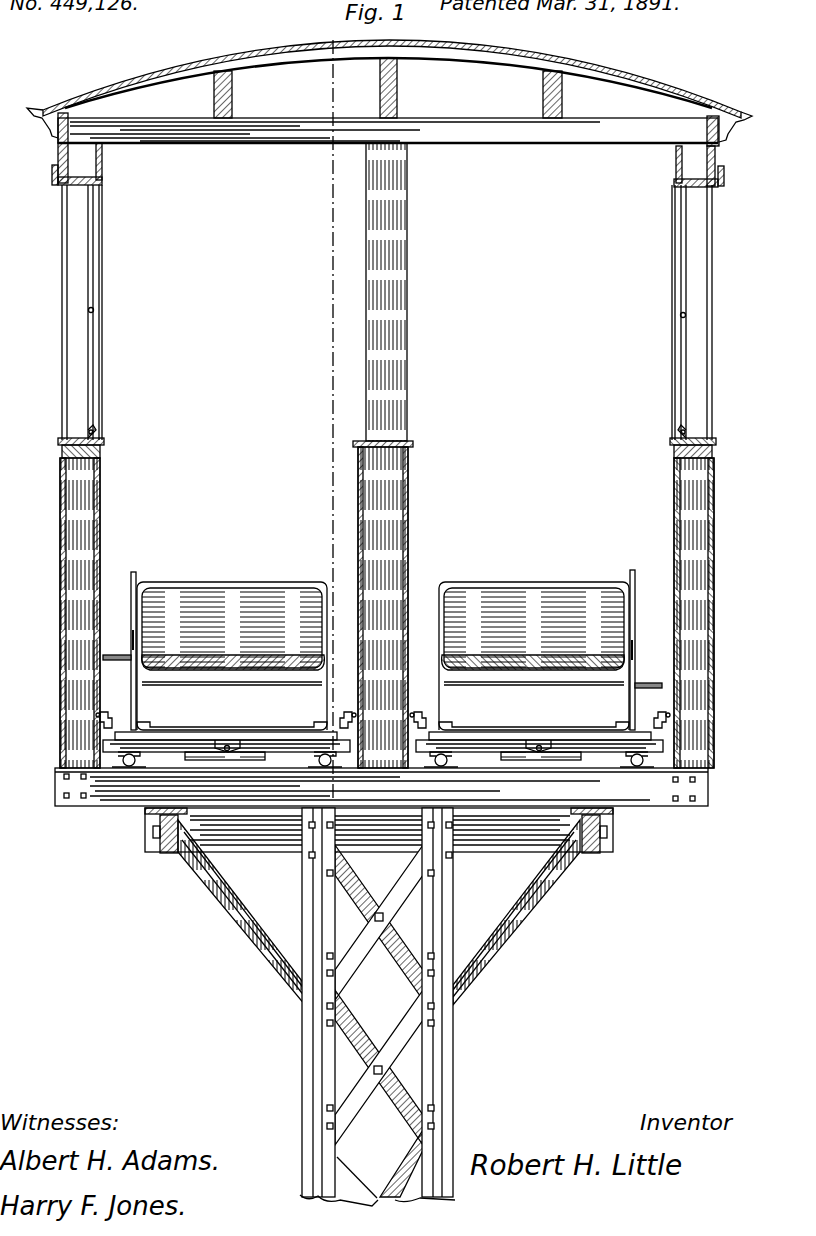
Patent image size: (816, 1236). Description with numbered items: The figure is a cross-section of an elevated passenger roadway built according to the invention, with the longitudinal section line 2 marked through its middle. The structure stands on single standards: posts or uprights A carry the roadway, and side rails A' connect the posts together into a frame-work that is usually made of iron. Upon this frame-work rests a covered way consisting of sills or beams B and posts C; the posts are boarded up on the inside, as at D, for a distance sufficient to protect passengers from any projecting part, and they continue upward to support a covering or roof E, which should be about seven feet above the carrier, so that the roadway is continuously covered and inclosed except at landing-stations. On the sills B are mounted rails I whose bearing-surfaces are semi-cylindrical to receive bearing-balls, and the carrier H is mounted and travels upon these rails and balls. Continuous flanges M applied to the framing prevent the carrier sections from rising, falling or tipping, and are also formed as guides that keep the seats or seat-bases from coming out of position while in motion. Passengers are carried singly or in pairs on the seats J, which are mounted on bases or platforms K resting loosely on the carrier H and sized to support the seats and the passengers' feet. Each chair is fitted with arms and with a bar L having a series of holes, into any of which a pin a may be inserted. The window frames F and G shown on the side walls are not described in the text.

The posts or uprights A is at (379, 1007).
The side rails A' is at (373, 830).
The sills or beams B is at (381, 787).
The posts C is at (382, 347).
The boarding D is at (100, 480).
The covering or roof E is at (290, 101).
The window fastening F is at (96, 312).
The windows G is at (380, 321).
The carrier H is at (390, 756).
The rails I is at (383, 776).
The seats J is at (383, 645).
The bases or platforms K is at (250, 731).
The bar L is at (131, 624).
The continuous flanges M is at (383, 713).
The pin a is at (382, 673).
The section line 2 is at (333, 414).